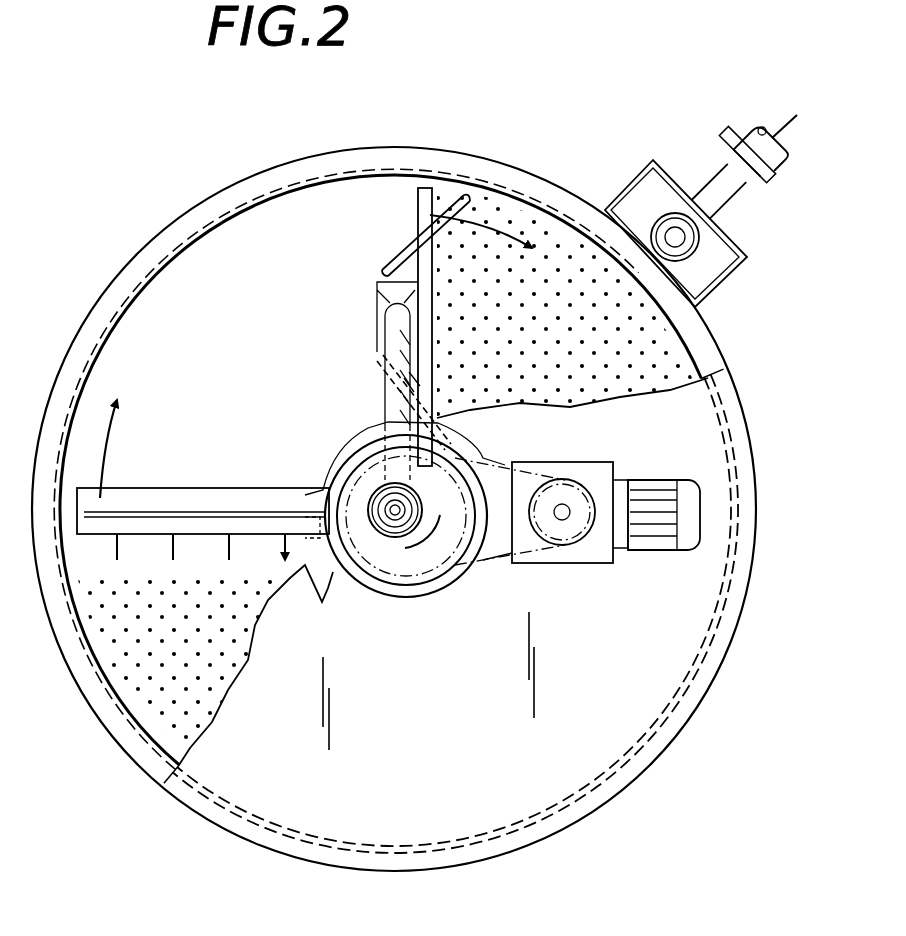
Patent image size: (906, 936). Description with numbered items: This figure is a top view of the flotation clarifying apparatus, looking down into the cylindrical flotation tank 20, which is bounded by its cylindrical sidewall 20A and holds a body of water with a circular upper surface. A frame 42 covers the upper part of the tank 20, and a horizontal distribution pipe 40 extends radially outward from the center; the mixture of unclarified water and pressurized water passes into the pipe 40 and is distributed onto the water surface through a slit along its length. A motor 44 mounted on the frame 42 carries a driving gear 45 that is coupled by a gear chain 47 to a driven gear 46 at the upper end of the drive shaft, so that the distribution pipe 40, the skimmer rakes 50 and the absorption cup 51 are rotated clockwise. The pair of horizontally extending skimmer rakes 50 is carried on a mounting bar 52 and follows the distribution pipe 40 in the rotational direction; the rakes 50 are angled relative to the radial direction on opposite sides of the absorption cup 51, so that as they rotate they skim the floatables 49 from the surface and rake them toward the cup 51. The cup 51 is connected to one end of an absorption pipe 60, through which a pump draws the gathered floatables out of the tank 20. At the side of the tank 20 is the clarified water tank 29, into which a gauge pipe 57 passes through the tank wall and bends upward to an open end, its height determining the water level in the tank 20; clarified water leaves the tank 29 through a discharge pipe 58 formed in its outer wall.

The flotation tank 20 is at (83, 692).
The cylindrical sidewall 20A is at (128, 740).
The clarified water tank 29 is at (662, 168).
The distribution pipe 40 is at (181, 497).
The frame 42 is at (473, 793).
The motor 44 is at (600, 558).
The driving gear 45 is at (565, 537).
The driven gear 46 is at (370, 545).
The gear chain 47 is at (488, 565).
The floatables 49 is at (503, 217).
The skimmer rakes 50 is at (403, 253).
The absorption cup 51 is at (377, 333).
The mounting bar 52 is at (418, 203).
The gauge pipe 57 is at (685, 245).
The discharge pipe 58 is at (767, 160).
The absorption pipe 60 is at (385, 413).